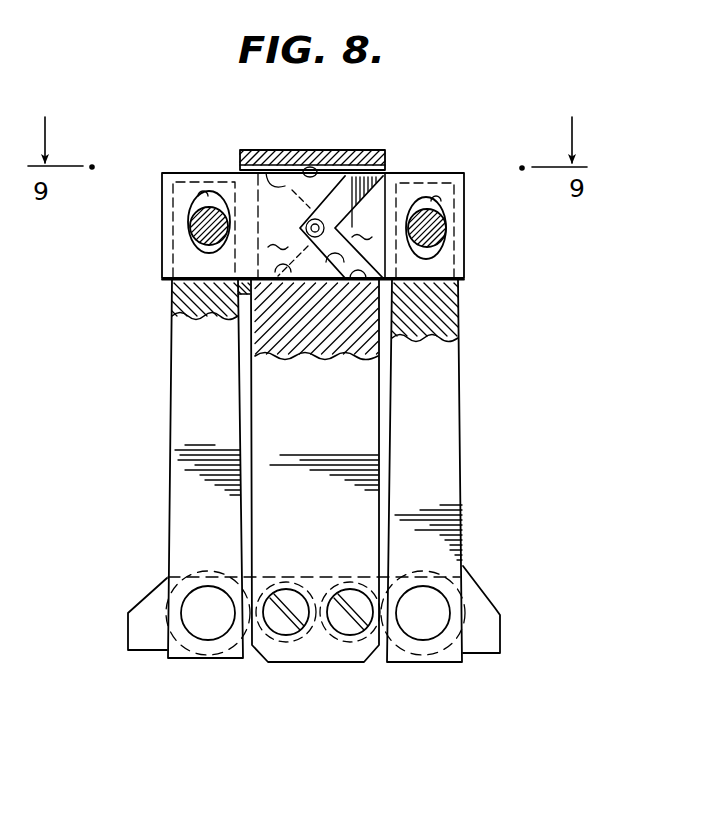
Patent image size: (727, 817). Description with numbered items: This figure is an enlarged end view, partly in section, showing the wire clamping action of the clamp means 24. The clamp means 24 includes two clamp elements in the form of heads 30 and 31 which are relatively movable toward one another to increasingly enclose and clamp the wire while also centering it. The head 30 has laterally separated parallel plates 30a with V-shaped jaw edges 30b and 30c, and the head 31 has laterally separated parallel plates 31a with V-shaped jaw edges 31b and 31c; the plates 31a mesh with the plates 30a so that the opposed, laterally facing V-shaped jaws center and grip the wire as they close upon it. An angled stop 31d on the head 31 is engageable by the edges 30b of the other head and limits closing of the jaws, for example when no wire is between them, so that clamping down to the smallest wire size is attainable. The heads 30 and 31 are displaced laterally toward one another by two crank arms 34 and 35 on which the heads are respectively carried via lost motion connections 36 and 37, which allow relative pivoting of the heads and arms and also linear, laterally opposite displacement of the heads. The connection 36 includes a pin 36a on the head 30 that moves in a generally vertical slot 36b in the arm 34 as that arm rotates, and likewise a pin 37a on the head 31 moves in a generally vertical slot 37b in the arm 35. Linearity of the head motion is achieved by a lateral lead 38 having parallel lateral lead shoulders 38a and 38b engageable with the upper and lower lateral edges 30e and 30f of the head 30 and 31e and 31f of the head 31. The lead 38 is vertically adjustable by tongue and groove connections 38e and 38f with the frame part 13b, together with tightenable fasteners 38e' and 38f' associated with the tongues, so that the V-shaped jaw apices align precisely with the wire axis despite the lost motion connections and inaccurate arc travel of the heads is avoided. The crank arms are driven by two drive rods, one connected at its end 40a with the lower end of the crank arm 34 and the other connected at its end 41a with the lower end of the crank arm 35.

The frame part 13b is at (478, 608).
The clamp means 24 is at (462, 99).
The head 30 is at (211, 168).
The parallel plates 30a is at (305, 227).
The V-shaped jaw edge 30b is at (348, 176).
The V-shaped jaw edge 30c is at (280, 300).
The upper lateral edge 30e is at (283, 167).
The lower lateral edge 30f is at (242, 294).
The head 31 is at (458, 166).
The parallel plates 31a is at (363, 227).
The V-shaped jaw edge 31b is at (263, 173).
The V-shaped jaw edge 31c is at (316, 318).
The angled stop 31d is at (378, 173).
The upper lateral edge 31e is at (386, 175).
The lower lateral edge 31f is at (457, 320).
The crank arm 34 is at (180, 425).
The crank arm 35 is at (445, 440).
The lost motion connection 36 is at (183, 230).
The pin 36a is at (192, 218).
The vertical slot 36b is at (197, 194).
The lost motion connection 37 is at (450, 245).
The pin 37a is at (443, 222).
The vertical slot 37b is at (437, 198).
The lateral lead 38 is at (247, 365).
The lateral lead shoulder 38a is at (313, 168).
The lateral lead shoulder 38b is at (368, 286).
The tongue and groove connection 38e is at (286, 571).
The tightenable fastener 38e' is at (280, 661).
The tongue and groove connection 38f is at (341, 583).
The tightenable fastener 38f' is at (361, 662).
The rod end 40a is at (200, 623).
The rod end 41a is at (430, 623).